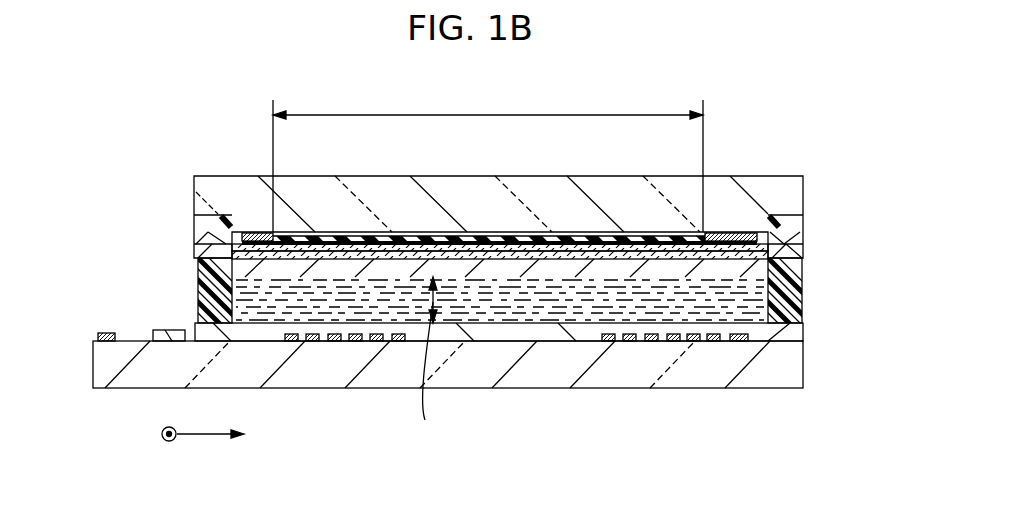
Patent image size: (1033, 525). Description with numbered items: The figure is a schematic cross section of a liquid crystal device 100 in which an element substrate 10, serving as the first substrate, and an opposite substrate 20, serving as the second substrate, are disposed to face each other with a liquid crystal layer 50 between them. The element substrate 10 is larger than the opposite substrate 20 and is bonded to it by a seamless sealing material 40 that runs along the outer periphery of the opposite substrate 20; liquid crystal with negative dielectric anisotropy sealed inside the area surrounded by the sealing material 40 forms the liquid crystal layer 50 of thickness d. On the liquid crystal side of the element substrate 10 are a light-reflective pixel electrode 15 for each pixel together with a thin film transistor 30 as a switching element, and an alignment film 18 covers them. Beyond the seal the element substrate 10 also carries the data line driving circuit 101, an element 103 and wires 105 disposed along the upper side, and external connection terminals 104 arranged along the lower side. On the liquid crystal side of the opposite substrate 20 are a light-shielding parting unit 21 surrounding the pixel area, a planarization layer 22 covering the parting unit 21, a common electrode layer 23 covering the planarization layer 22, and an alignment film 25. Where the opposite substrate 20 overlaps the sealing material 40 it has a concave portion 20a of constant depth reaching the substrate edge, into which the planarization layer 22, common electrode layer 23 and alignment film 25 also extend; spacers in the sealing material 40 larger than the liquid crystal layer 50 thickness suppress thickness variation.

The liquid crystal device 100 is at (666, 61).
The element substrate 10 is at (803, 355).
The pixel electrode 15 is at (371, 341).
The alignment film 18 is at (505, 324).
The opposite substrate 20 is at (803, 182).
The concave portion 20a is at (222, 215).
The parting unit 21 is at (257, 233).
The planarization layer 22 is at (452, 236).
The common electrode layer 23 is at (500, 244).
The alignment film 25 is at (555, 252).
The thin film transistor 30 is at (604, 341).
The sealing material 40 is at (198, 270).
The liquid crystal layer 50 is at (557, 310).
The data line driving circuit 101 is at (166, 330).
The element disposed along upper side 103 is at (713, 341).
The external connection terminal 104 is at (106, 333).
The wire 105 is at (739, 341).